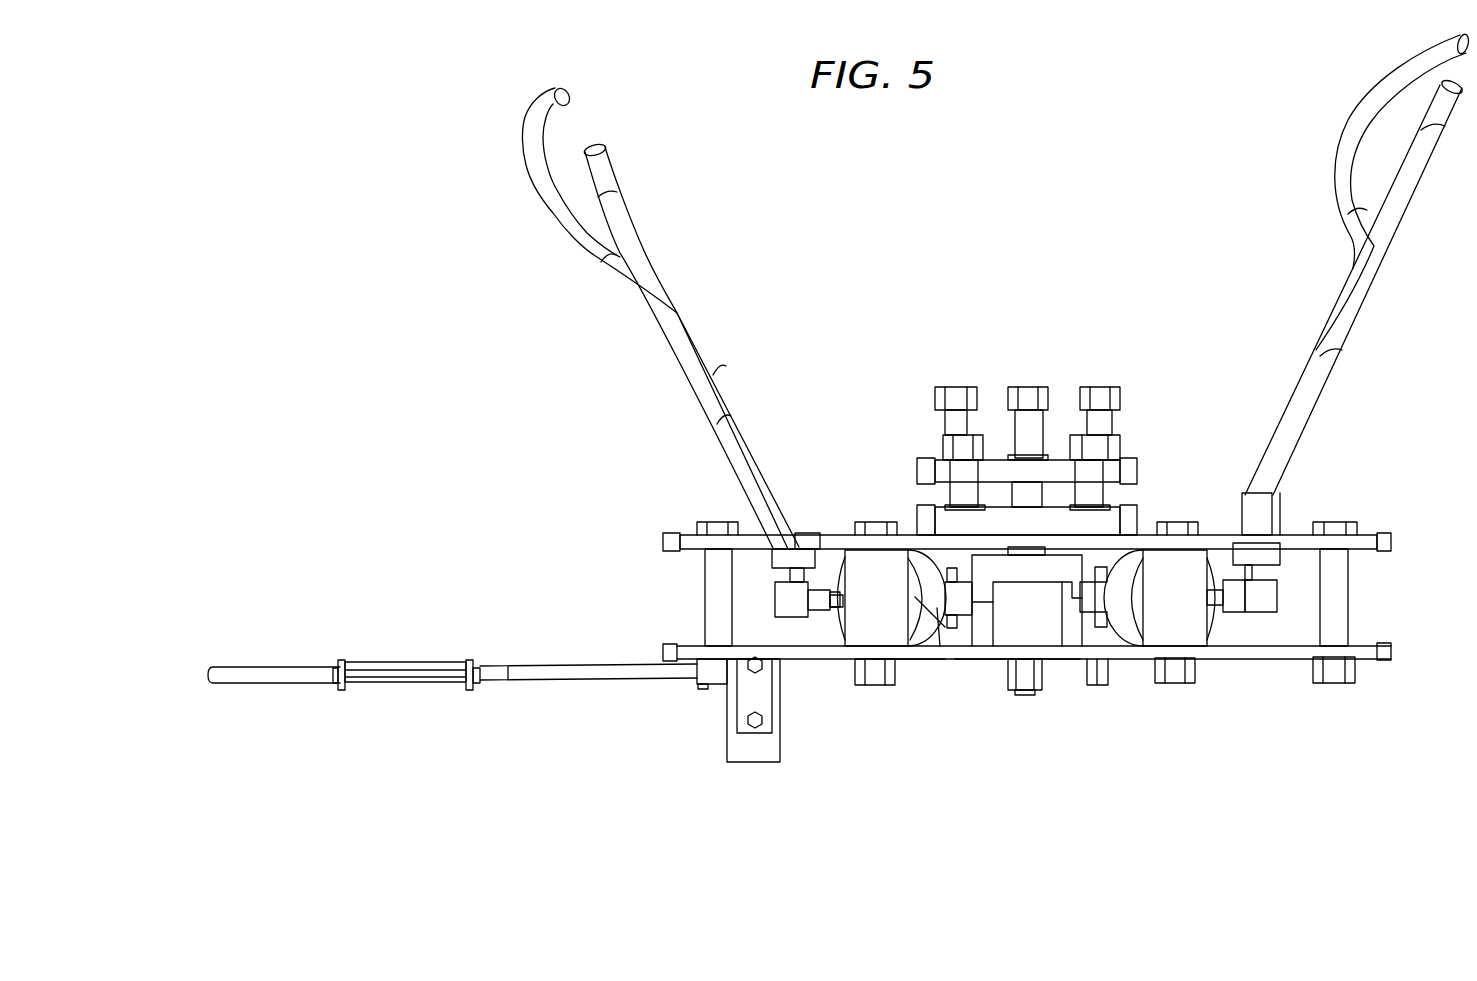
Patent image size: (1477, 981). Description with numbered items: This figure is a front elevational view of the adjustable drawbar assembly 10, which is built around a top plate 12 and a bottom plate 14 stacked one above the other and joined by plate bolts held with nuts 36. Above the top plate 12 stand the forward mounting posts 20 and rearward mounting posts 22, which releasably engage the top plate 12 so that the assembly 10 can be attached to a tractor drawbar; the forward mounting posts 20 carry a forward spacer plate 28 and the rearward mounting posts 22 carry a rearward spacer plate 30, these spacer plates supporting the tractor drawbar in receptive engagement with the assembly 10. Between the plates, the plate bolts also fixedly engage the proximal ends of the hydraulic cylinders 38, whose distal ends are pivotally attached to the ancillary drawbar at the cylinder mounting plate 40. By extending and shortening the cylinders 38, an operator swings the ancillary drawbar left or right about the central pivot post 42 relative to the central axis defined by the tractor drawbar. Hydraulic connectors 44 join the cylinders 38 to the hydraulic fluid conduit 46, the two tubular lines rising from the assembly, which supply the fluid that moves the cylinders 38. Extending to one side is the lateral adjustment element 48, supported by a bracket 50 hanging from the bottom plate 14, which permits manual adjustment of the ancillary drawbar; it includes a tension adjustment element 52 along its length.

The adjustable drawbar assembly 10 is at (1070, 168).
The top plate 12 is at (1392, 540).
The bottom plate 14 is at (1392, 653).
The forward mounting posts 20 is at (958, 487).
The rearward mounting posts 22 is at (947, 422).
The forward spacer plate 28 is at (1133, 512).
The rearward spacer plate 30 is at (1130, 469).
The nuts 36 is at (1173, 683).
The hydraulic cylinders 38 is at (920, 598).
The cylinder mounting plate 40 is at (1093, 597).
The central pivot post 42 is at (1022, 697).
The hydraulic connectors 44 is at (1280, 540).
The hydraulic fluid conduit 46 is at (722, 372).
The lateral adjustment element 48 is at (1025, 793).
The bracket 50 is at (757, 747).
The tension adjustment element 52 is at (408, 660).